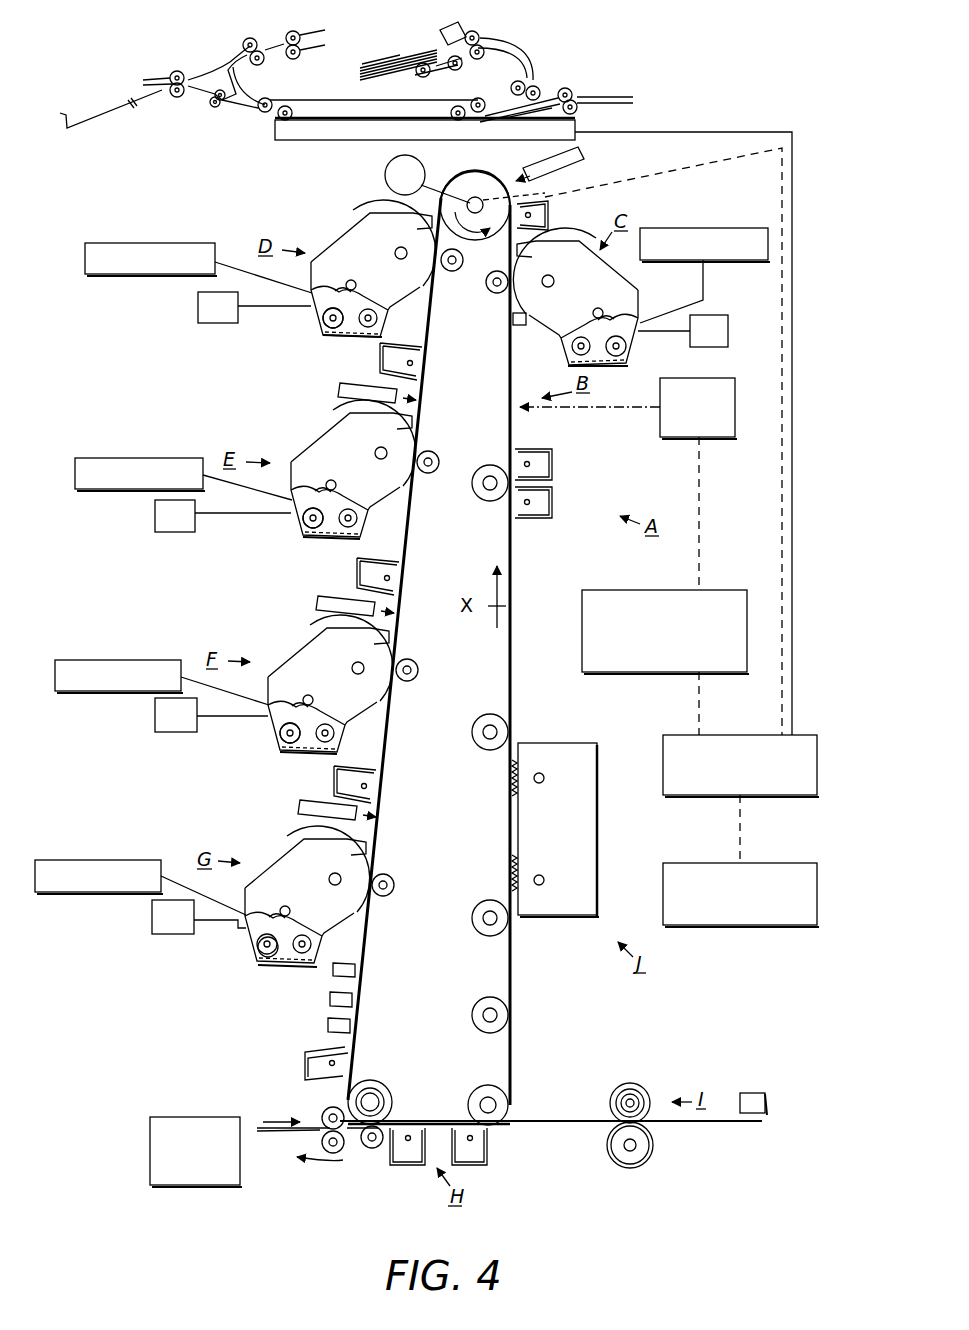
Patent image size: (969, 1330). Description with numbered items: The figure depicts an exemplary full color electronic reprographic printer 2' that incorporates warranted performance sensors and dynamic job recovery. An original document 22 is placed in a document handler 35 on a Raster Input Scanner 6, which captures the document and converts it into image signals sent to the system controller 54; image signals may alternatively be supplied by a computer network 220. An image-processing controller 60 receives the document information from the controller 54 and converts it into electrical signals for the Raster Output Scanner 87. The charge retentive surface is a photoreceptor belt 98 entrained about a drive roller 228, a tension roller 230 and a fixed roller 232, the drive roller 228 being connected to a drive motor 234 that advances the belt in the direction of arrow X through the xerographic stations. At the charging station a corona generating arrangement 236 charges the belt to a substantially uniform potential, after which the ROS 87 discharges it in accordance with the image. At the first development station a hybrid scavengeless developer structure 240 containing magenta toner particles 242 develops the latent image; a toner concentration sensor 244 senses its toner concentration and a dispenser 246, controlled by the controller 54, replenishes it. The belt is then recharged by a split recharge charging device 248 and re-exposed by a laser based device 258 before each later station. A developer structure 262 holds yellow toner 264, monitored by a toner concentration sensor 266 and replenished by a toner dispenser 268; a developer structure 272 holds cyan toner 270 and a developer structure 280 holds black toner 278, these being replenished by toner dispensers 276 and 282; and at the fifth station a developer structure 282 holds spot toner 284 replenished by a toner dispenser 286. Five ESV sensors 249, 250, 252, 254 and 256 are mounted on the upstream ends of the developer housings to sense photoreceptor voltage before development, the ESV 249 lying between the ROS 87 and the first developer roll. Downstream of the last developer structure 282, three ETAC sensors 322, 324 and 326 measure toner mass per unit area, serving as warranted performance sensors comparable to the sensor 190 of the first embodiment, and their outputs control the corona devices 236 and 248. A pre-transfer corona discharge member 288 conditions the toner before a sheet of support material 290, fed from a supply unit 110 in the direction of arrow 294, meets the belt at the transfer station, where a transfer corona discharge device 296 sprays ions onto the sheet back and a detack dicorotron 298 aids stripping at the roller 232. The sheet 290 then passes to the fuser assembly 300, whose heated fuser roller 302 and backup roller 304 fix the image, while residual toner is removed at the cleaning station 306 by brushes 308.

The full color printer 2' is at (750, 44).
The Raster Input Scanner 6 is at (316, 142).
The original document 22 is at (355, 67).
The document handler 35 is at (400, 22).
The system controller 54 is at (663, 746).
The image-processing controller 60 is at (606, 590).
The Raster Output Scanner 87 is at (645, 395).
The photoreceptor belt 98 is at (520, 575).
The supply unit 110 is at (160, 1118).
The warranted performance sensor 190 is at (762, 1093).
The computer network 220 is at (747, 925).
The drive roller 228 is at (458, 182).
The tension roller 230 is at (382, 1094).
The fixed roller 232 is at (478, 1097).
The drive motor 234 is at (386, 180).
The corona generating arrangement 236 is at (638, 476).
The developer structure 240 is at (665, 287).
The magenta toner particles 242 is at (604, 368).
The toner concentration sensor 244 is at (729, 326).
The dispenser 246 is at (700, 236).
The second charging device 248 is at (553, 217).
The ESV sensor 249 is at (521, 328).
The ESV sensor 250 is at (354, 210).
The ESV sensor 252 is at (333, 410).
The ESV sensor 254 is at (312, 630).
The ESV sensor 256 is at (300, 830).
The second exposure/imaging device 258 is at (588, 161).
The developer structure 262 is at (322, 334).
The yellow toner particles 264 is at (315, 318).
The toner concentration sensor 266 is at (198, 302).
The toner dispenser 268 is at (150, 243).
The cyan toner 270 is at (292, 524).
The developer structure 272 is at (302, 537).
The toner dispenser 276 is at (130, 458).
The black toner 278 is at (268, 735).
The developer structure 280 is at (280, 752).
The developer structure 282 is at (118, 660).
The spot toner 284 is at (250, 942).
The toner dispenser 286 is at (108, 860).
The pre-transfer corona discharge member 288 is at (305, 1056).
The sheet of support material 290 is at (302, 1132).
The arrow 294 is at (275, 1120).
The transfer corona discharge device 296 is at (398, 1165).
The detack dicorotron 298 is at (470, 1165).
The fuser assembly 300 is at (650, 1049).
The heated fuser roller 302 is at (650, 1098).
The backup roller 304 is at (642, 1160).
The cleaning station 306 is at (532, 748).
The brushes 308 is at (510, 780).
The Extended Toner Area Coverage Sensor 322 is at (357, 969).
The Extended Toner Area Coverage Sensor 324 is at (354, 1000).
The Extended Toner Area Coverage Sensor 326 is at (352, 1026).